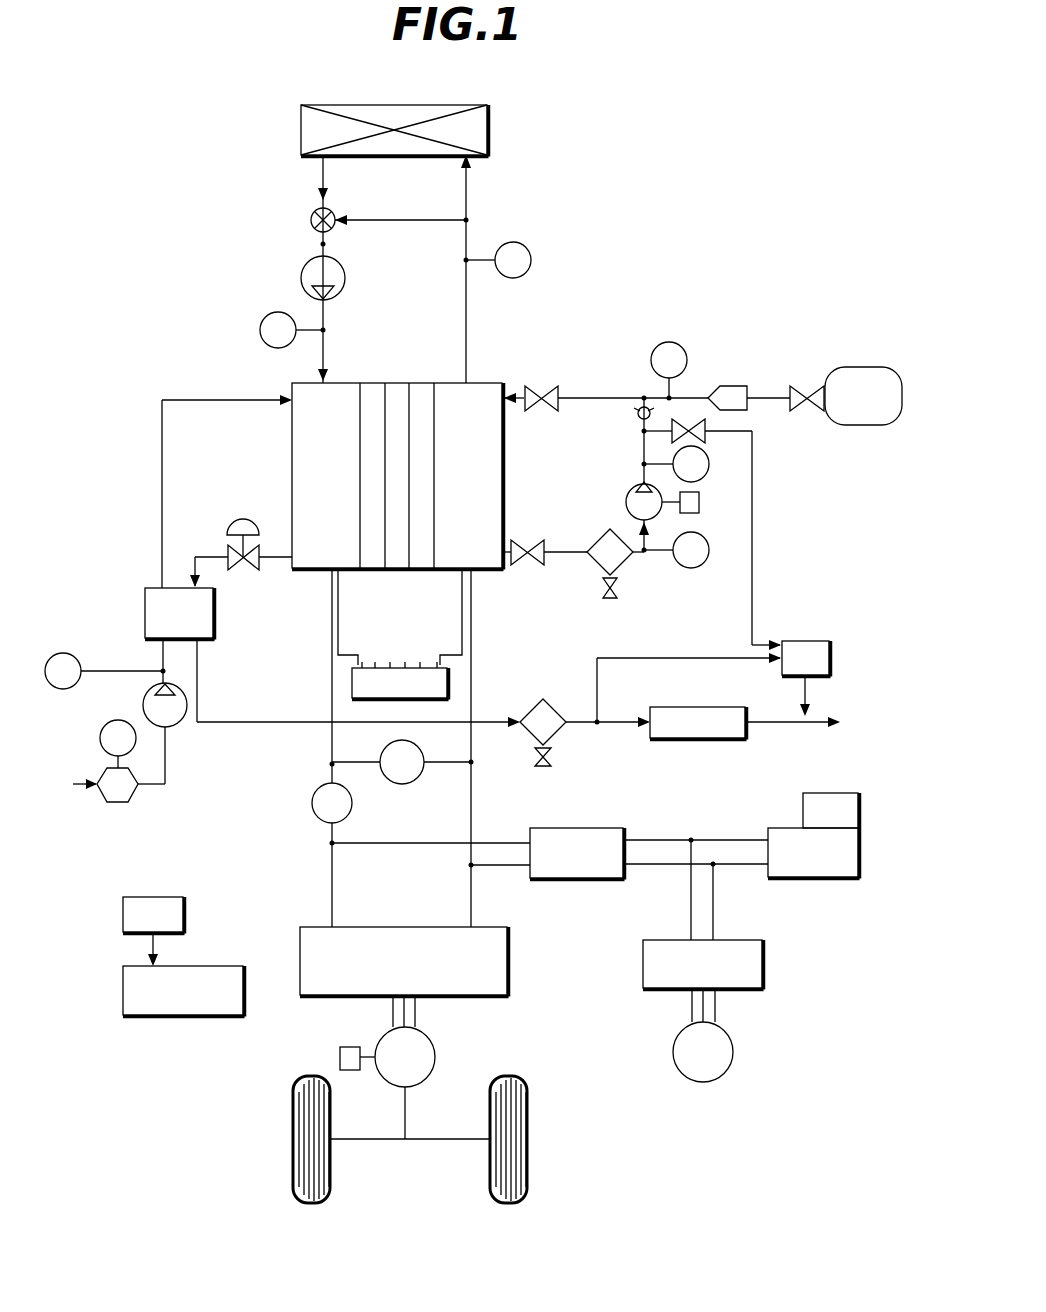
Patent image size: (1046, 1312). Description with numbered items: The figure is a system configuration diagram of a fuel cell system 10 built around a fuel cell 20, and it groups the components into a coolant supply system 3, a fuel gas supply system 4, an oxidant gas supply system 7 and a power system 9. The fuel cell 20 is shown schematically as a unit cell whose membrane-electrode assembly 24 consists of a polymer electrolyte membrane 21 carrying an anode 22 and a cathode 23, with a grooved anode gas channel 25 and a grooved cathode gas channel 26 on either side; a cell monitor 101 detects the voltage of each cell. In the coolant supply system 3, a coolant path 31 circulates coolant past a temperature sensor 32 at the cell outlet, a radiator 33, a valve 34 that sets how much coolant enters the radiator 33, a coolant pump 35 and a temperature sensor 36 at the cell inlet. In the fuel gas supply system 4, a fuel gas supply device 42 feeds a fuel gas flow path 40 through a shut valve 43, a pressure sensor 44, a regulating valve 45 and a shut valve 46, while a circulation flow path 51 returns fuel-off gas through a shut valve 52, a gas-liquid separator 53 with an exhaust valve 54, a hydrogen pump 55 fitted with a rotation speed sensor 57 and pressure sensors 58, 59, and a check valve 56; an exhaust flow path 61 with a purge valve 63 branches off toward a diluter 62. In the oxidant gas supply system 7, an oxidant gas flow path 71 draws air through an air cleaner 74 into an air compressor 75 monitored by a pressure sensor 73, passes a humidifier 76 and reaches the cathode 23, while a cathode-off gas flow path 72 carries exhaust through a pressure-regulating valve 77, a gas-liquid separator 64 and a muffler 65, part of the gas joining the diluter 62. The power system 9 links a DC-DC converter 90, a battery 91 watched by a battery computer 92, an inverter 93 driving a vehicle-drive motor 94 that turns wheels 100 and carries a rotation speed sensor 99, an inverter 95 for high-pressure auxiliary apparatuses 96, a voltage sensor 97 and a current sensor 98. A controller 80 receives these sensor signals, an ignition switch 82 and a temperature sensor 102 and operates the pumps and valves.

The fuel cell system 10 is at (716, 172).
The coolant supply system 3 is at (406, 284).
The fuel gas supply system 4 is at (540, 457).
The oxidant gas supply system 7 is at (199, 444).
The power system 9 is at (411, 902).
The fuel cell 20 is at (401, 482).
The polymer electrolyte membrane 21 is at (398, 570).
The anode 22 is at (423, 570).
The cathode 23 is at (374, 570).
The membrane-electrode assembly 24 is at (450, 613).
The anode gas channel 25 is at (494, 575).
The cathode gas channel 26 is at (301, 572).
The coolant path 31 is at (467, 312).
The temperature sensor 32 is at (522, 243).
The radiator 33 is at (489, 132).
The valve 34 is at (311, 214).
The coolant pump 35 is at (303, 268).
The temperature sensor 36 is at (264, 318).
The fuel gas flow path 40 is at (600, 396).
The fuel gas supply device 42 is at (858, 368).
The shut valve 43 is at (804, 385).
The pressure sensor 44 is at (656, 345).
The regulating valve 45 is at (722, 386).
The shut valve 46 is at (537, 385).
The circulation flow path 51 is at (557, 560).
The shut valve 52 is at (530, 540).
The gas-liquid separator 53 is at (600, 537).
The exhaust valve 54 is at (612, 600).
The hydrogen pump 55 is at (630, 490).
The check valve 56 is at (637, 418).
The rotation speed sensor 57 is at (700, 505).
The pressure sensor 58 is at (698, 568).
The pressure sensor 59 is at (730, 450).
The exhaust flow path 61 is at (753, 505).
The diluter 62 is at (816, 640).
The purge valve 63 is at (706, 427).
The gas-liquid separator 64 is at (552, 760).
The muffler 65 is at (700, 740).
The oxidant gas flow path 71 is at (160, 464).
The cathode-off gas flow path 72 is at (278, 555).
The pressure sensor 73 is at (64, 652).
The air cleaner 74 is at (118, 805).
The air compressor 75 is at (172, 727).
The humidifier 76 is at (215, 612).
The pressure-regulating valve 77 is at (236, 522).
The controller 80 is at (205, 966).
The ignition switch 82 is at (185, 905).
The DC-DC converter 90 is at (545, 828).
The battery 91 is at (770, 826).
The battery computer 92 is at (840, 792).
The inverter 93 is at (509, 962).
The vehicle-drive motor 94 is at (435, 1062).
The inverter 95 is at (765, 962).
The high-pressure auxiliary apparatuses 96 is at (733, 1057).
The voltage sensor 97 is at (410, 785).
The current sensor 98 is at (352, 805).
The rotation speed sensor 99 is at (340, 1058).
The wheels 100 is at (528, 1105).
The cell monitor 101 is at (449, 683).
The temperature sensor 102 is at (100, 735).